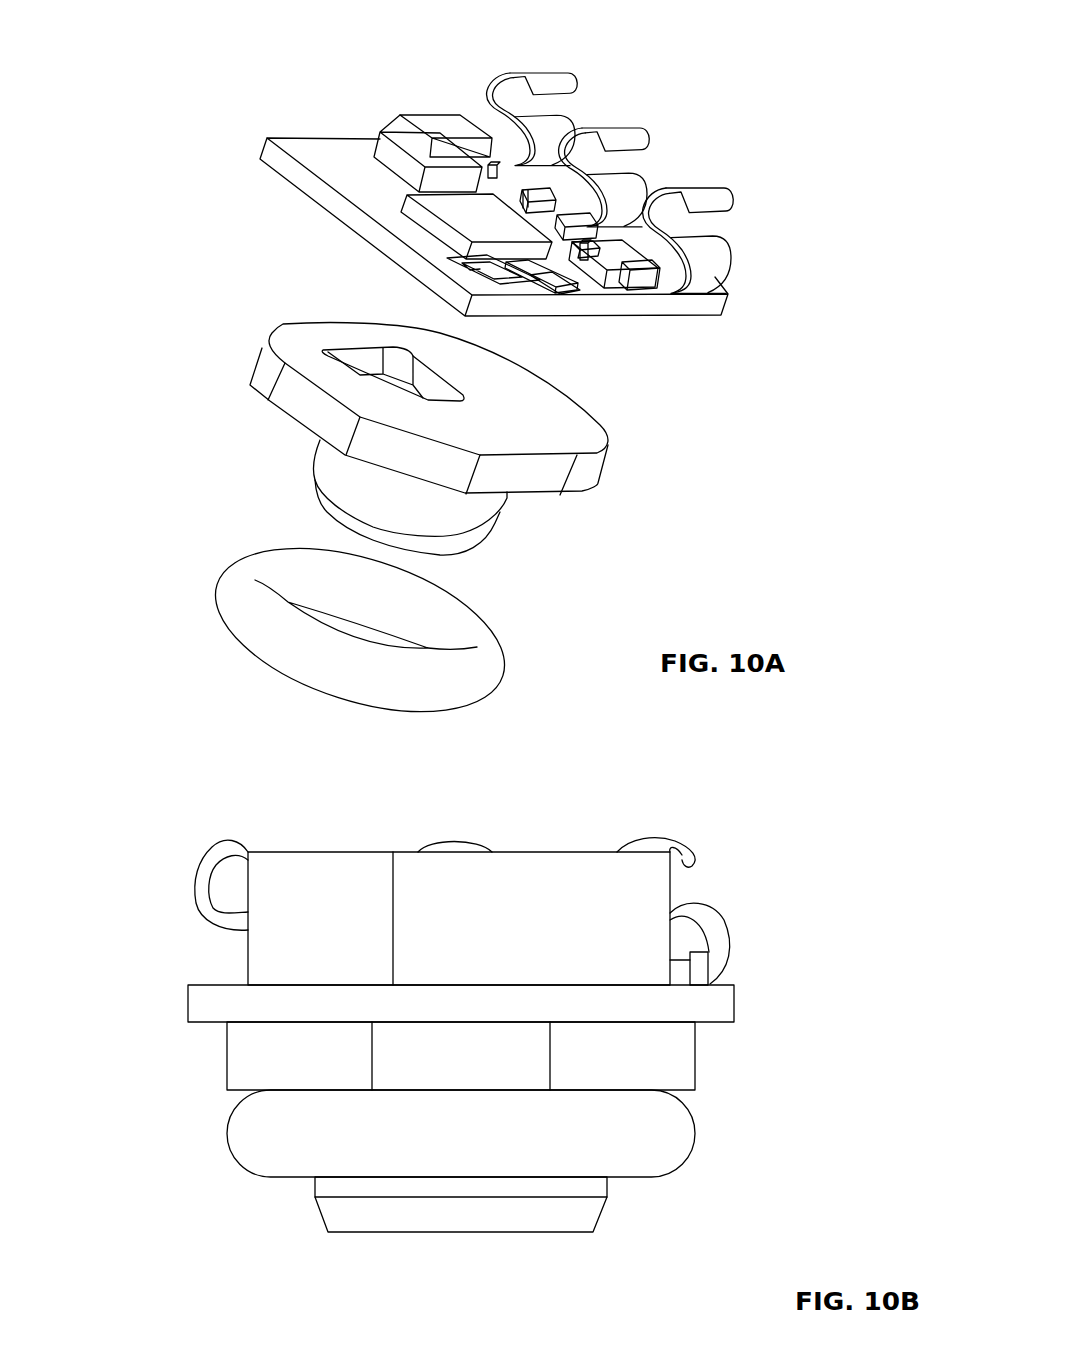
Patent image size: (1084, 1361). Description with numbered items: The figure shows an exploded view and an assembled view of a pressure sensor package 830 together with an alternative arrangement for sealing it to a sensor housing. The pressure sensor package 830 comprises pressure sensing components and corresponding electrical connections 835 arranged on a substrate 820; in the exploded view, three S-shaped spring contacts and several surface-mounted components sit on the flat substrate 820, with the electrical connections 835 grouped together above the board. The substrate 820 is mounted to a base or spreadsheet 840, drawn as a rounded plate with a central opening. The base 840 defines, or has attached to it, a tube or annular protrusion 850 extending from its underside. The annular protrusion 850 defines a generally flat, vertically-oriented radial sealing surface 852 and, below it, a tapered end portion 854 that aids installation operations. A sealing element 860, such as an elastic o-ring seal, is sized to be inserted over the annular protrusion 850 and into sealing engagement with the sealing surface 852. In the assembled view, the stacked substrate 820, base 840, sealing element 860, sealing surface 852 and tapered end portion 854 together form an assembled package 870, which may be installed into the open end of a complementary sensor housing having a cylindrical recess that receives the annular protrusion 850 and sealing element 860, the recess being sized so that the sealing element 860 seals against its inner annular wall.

In FIG. 10A, the substrate 820 is at (312, 148).
In FIG. 10B, the substrate 820 is at (723, 1007).
In FIG. 10A, the pressure sensor package 830 is at (699, 194).
In FIG. 10B, the pressure sensor package 830 is at (726, 910).
In FIG. 10A, the pressure sensing components and corresponding electrical connections 835 is at (610, 75).
In FIG. 10A, the base or spreadsheet 840 is at (577, 425).
In FIG. 10B, the base or spreadsheet 840 is at (677, 1053).
In FIG. 10A, the annular protrusion 850 is at (407, 508).
In FIG. 10B, the annular protrusion 850 is at (475, 1233).
In FIG. 10A, the radial sealing surface 852 is at (493, 510).
In FIG. 10B, the radial sealing surface 852 is at (325, 1188).
In FIG. 10A, the tapered end portion 854 is at (468, 545).
In FIG. 10B, the tapered end portion 854 is at (550, 1223).
In FIG. 10A, the sealing element 860 is at (508, 663).
In FIG. 10B, the sealing element 860 is at (677, 1128).
In FIG. 10B, the assembled package 870 is at (447, 1014).